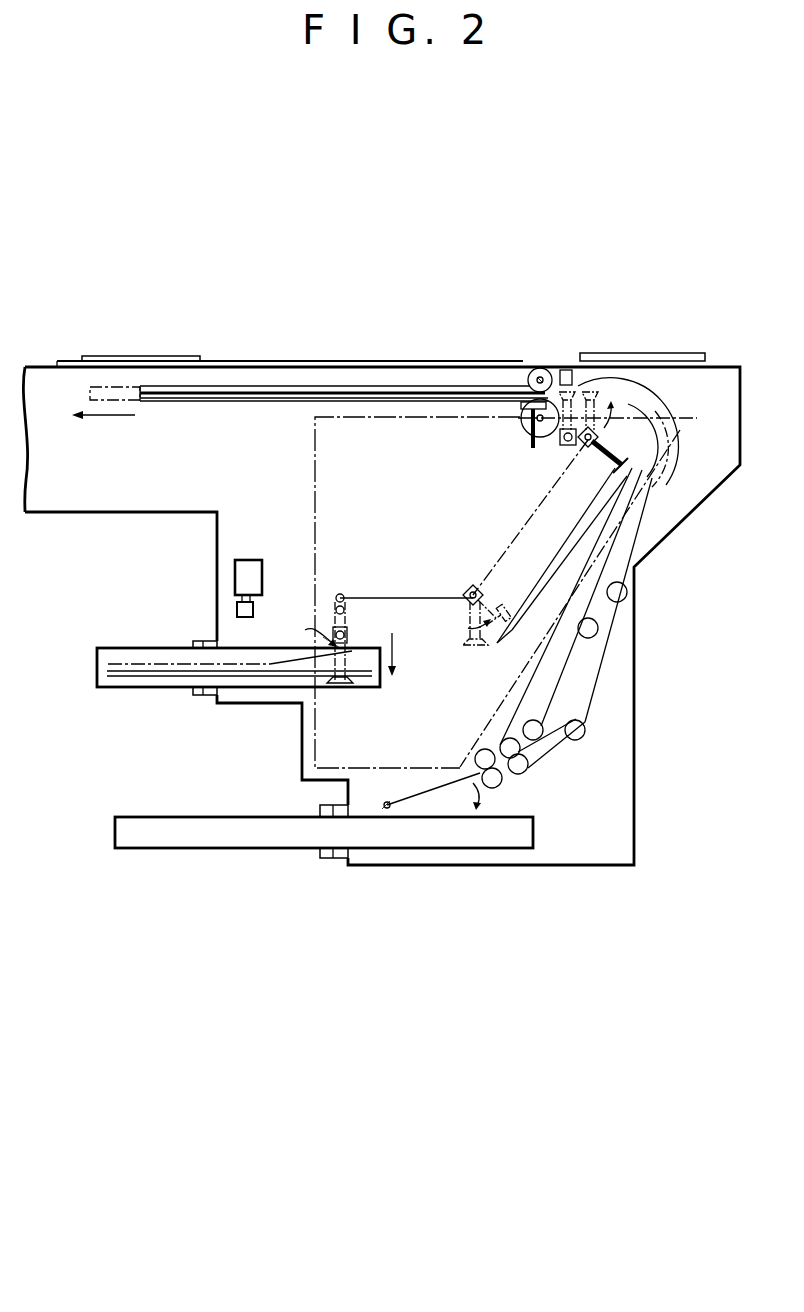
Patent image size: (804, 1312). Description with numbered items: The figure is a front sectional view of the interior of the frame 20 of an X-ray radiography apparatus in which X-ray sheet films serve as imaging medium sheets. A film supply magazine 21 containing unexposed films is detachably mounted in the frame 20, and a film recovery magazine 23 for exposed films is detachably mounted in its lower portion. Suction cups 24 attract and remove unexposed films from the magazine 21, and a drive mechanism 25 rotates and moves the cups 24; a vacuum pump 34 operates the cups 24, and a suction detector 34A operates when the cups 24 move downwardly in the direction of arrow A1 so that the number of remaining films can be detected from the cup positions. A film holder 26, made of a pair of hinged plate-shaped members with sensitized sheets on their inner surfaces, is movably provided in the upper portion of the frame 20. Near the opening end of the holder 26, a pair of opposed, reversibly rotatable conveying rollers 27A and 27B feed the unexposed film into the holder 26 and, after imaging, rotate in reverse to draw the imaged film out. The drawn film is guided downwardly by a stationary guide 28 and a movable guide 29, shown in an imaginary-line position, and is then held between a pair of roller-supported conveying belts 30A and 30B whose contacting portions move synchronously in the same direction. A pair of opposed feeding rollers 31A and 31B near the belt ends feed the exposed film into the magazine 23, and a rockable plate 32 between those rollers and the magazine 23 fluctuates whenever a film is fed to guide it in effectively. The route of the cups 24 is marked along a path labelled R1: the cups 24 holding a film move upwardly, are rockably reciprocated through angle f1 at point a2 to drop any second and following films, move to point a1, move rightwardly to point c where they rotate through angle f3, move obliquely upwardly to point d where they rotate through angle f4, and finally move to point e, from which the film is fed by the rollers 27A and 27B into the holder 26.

The frame 20 is at (577, 867).
The film supply magazine 21 is at (127, 647).
The film recovery magazine 23 is at (115, 832).
The suction cups 24 is at (623, 468).
The drive mechanism 25 is at (313, 462).
The film holder 26 is at (233, 384).
The conveying roller 27A is at (542, 366).
The conveying roller 27B is at (527, 434).
The stationary guide 28 is at (654, 394).
The movable guide 29 is at (647, 419).
The conveying belt 30A is at (663, 528).
The conveying belt 30B is at (603, 548).
The feeding roller 31A is at (497, 778).
The feeding roller 31B is at (480, 758).
The rockable plate 32 is at (428, 795).
The vacuum pump 34 is at (250, 560).
The suction detector 34A is at (237, 608).
The point a1 is at (401, 585).
The point a2 is at (352, 642).
The point c is at (487, 605).
The point d is at (586, 417).
The point e is at (565, 450).
The angle f1 is at (314, 632).
The angle f3 is at (467, 630).
The angle f4 is at (622, 427).
The link R1 is at (408, 596).
The arrow A1 is at (407, 654).